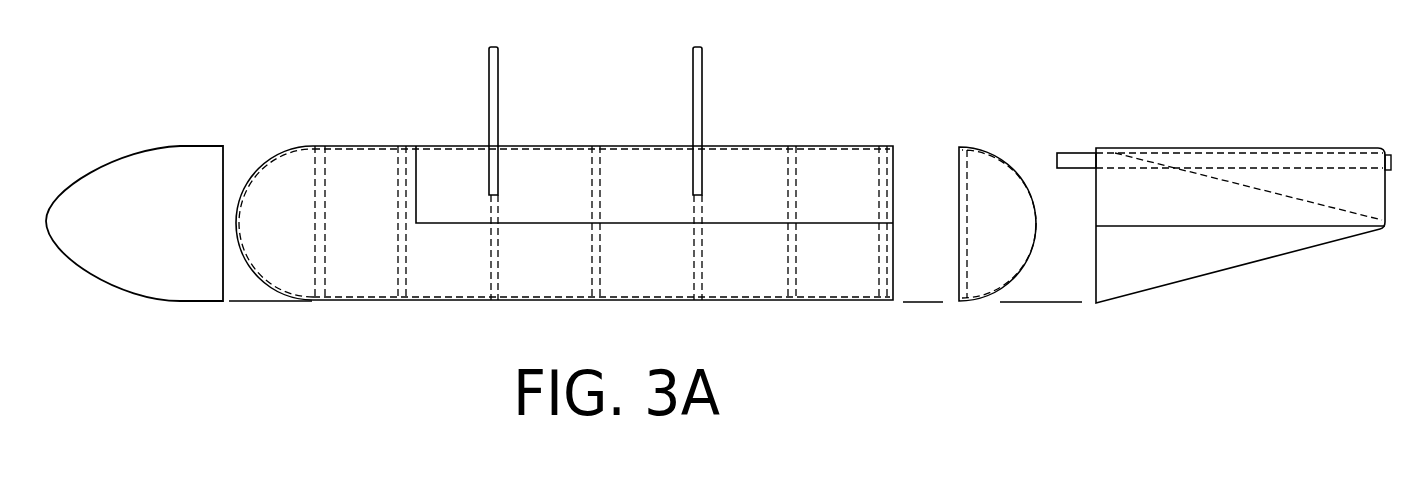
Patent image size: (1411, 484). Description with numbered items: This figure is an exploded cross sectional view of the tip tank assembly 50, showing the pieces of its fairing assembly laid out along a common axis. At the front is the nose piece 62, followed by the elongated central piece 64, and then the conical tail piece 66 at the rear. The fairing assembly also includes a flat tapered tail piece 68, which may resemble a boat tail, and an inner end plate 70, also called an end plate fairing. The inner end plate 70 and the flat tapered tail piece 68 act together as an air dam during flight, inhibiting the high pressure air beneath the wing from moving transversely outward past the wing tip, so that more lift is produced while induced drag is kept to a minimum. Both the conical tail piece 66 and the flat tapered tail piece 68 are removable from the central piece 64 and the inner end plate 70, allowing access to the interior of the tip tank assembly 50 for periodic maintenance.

The tip tank assembly 50 is at (268, 117).
The nose piece 62 is at (131, 276).
The central piece 64 is at (418, 303).
The conical tail piece 66 is at (1207, 262).
The flat tapered tail piece 68 is at (1367, 198).
The inner end plate 70 is at (793, 138).